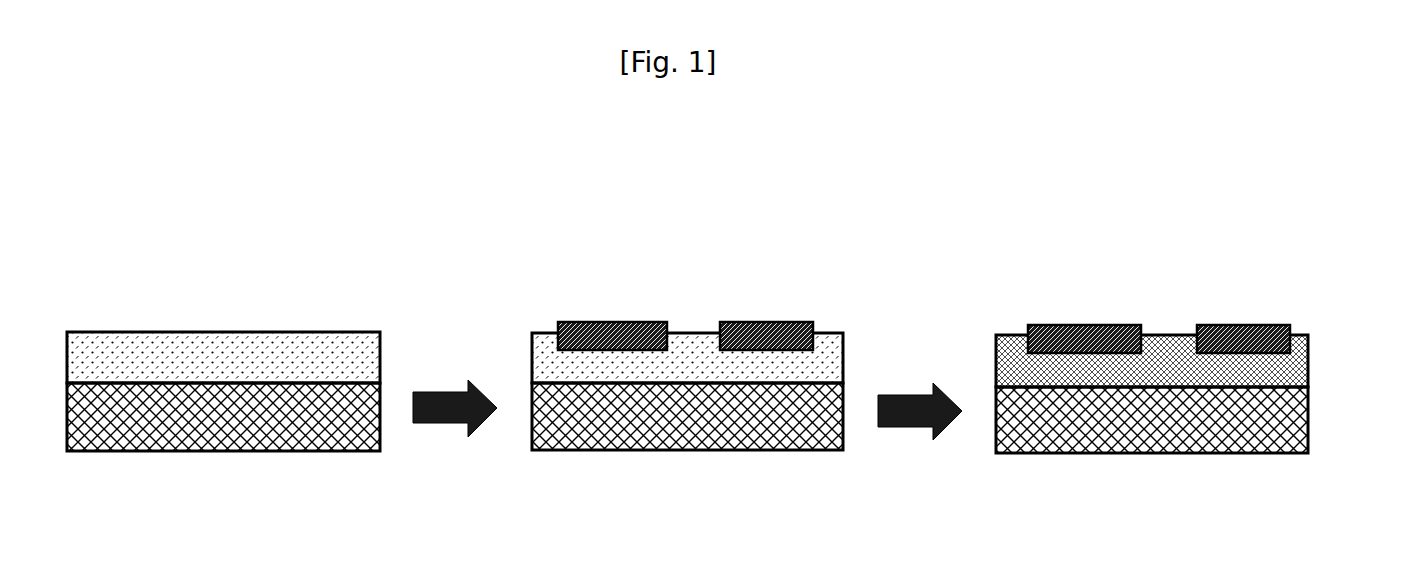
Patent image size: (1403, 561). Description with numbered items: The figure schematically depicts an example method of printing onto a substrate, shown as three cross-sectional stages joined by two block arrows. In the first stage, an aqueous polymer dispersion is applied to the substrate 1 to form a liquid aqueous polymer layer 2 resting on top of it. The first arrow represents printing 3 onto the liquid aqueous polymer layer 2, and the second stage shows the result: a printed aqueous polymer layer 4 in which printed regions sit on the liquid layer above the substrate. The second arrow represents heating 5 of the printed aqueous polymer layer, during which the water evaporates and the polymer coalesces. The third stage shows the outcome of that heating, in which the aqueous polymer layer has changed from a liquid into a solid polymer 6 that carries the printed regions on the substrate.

The substrate 1 is at (187, 420).
The liquid aqueous polymer layer 2 is at (248, 358).
The printing 3 is at (455, 395).
The printed aqueous polymer layer 4 is at (743, 320).
The heating 5 is at (920, 398).
The solid polymer 6 is at (1292, 365).